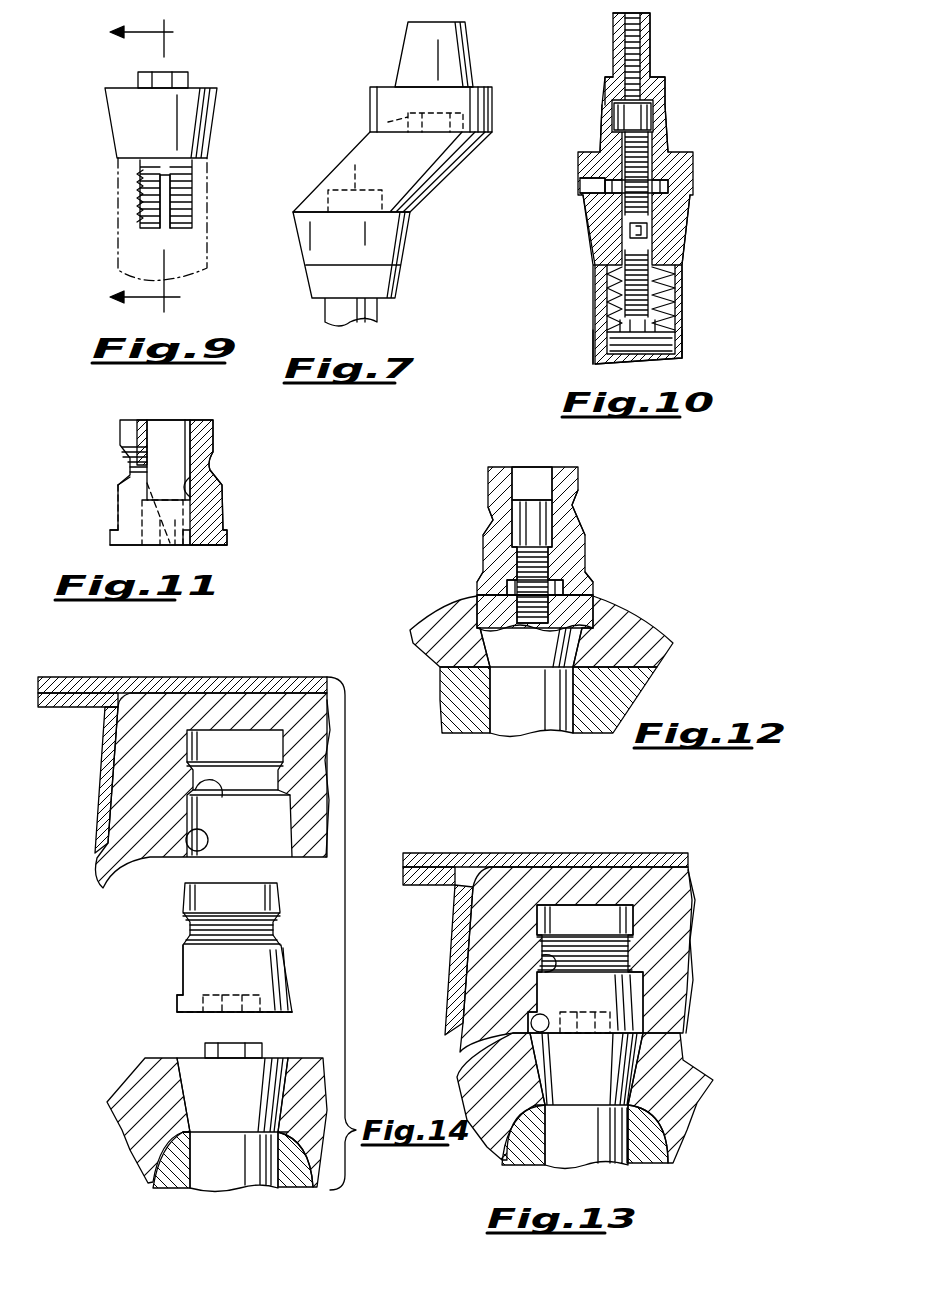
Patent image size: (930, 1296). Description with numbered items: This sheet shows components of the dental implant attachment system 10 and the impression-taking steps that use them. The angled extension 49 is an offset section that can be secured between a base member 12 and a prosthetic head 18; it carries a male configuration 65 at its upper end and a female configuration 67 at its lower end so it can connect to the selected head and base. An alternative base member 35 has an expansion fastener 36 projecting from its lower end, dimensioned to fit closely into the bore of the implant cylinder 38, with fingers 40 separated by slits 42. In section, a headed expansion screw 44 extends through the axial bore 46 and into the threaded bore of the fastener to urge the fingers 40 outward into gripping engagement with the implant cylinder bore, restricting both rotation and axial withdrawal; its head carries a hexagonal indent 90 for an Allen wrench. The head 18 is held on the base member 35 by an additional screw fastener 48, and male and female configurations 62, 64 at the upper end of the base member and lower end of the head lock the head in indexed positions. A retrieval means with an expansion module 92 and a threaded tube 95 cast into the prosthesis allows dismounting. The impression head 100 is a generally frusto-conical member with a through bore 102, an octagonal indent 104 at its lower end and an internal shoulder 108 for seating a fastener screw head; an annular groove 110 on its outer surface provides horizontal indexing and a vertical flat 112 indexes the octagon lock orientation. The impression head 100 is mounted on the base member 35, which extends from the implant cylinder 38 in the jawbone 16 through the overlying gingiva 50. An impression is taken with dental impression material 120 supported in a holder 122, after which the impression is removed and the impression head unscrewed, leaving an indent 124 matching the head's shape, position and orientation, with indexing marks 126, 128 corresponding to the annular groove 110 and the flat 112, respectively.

In FIG. 9, the attachment system 10 is at (127, 166).
In FIG. 7, the base member 12 is at (398, 240).
In FIG. 12, the jawbone 16 is at (475, 732).
In FIG. 14, the jawbone 16 is at (180, 1178).
In FIG. 13, the jawbone 16 is at (527, 1154).
In FIG. 7, the prosthetic head 18 is at (370, 90).
In FIG. 10, the prosthetic head 18 is at (693, 163).
In FIG. 9, the base member 35 is at (218, 115).
In FIG. 10, the base member 35 is at (586, 222).
In FIG. 12, the base member 35 is at (505, 650).
In FIG. 14, the base member 35 is at (207, 1090).
In FIG. 13, the base member 35 is at (663, 1117).
In FIG. 9, the expansion fastener 36 is at (192, 197).
In FIG. 10, the expansion fastener 36 is at (612, 293).
In FIG. 9, the implant cylinder 38 is at (118, 235).
In FIG. 10, the implant cylinder 38 is at (600, 344).
In FIG. 12, the implant cylinder 38 is at (532, 722).
In FIG. 14, the implant cylinder 38 is at (227, 1177).
In FIG. 13, the implant cylinder 38 is at (673, 1158).
In FIG. 9, the fingers 40 is at (167, 228).
In FIG. 9, the slits 42 is at (140, 190).
In FIG. 10, the expansion screw 44 is at (665, 291).
In FIG. 10, the axial bore 46 is at (618, 314).
In FIG. 10, the screw fastener 48 is at (626, 141).
In FIG. 12, the screw fastener 48 is at (527, 553).
In FIG. 7, the angled extension 49 is at (437, 173).
In FIG. 12, the gingiva 50 is at (645, 608).
In FIG. 14, the gingiva 50 is at (127, 1080).
In FIG. 13, the gingiva 50 is at (693, 1048).
In FIG. 9, the male configuration 62 is at (178, 78).
In FIG. 10, the male configuration 62 is at (668, 187).
In FIG. 12, the male configuration 62 is at (510, 588).
In FIG. 14, the male configuration 62 is at (208, 1045).
In FIG. 10, the female configuration 64 is at (585, 186).
In FIG. 7, the male configuration 65 is at (383, 122).
In FIG. 7, the female configuration 67 is at (353, 162).
In FIG. 10, the hexagonal indent 90 is at (645, 233).
In FIG. 10, the expansion module 92 is at (660, 76).
In FIG. 10, the threaded tube 95 is at (616, 46).
In FIG. 11, the impression head 100 is at (215, 433).
In FIG. 12, the impression head 100 is at (585, 483).
In FIG. 14, the impression head 100 is at (200, 902).
In FIG. 13, the impression head 100 is at (620, 917).
In FIG. 11, the through bore 102 is at (172, 437).
In FIG. 12, the through bore 102 is at (528, 470).
In FIG. 11, the octagonal indent 104 is at (188, 547).
In FIG. 12, the octagonal indent 104 is at (563, 587).
In FIG. 14, the octagonal indent 104 is at (257, 988).
In FIG. 11, the internal shoulder 108 is at (188, 480).
In FIG. 12, the internal shoulder 108 is at (552, 530).
In FIG. 11, the annular groove 110 is at (130, 470).
In FIG. 12, the annular groove 110 is at (490, 513).
In FIG. 14, the annular groove 110 is at (278, 931).
In FIG. 13, the annular groove 110 is at (627, 957).
In FIG. 11, the vertical flat 112 is at (118, 507).
In FIG. 14, the vertical flat 112 is at (182, 966).
In FIG. 13, the vertical flat 112 is at (537, 1003).
In FIG. 14, the dental impression material 120 is at (140, 738).
In FIG. 13, the dental impression material 120 is at (615, 852).
In FIG. 14, the holder 122 is at (127, 677).
In FIG. 13, the holder 122 is at (520, 853).
In FIG. 14, the indent 124 is at (273, 848).
In FIG. 14, the indexing mark 126 is at (222, 797).
In FIG. 13, the indexing mark 126 is at (550, 963).
In FIG. 14, the indexing mark 128 is at (193, 860).
In FIG. 13, the indexing mark 128 is at (552, 1040).